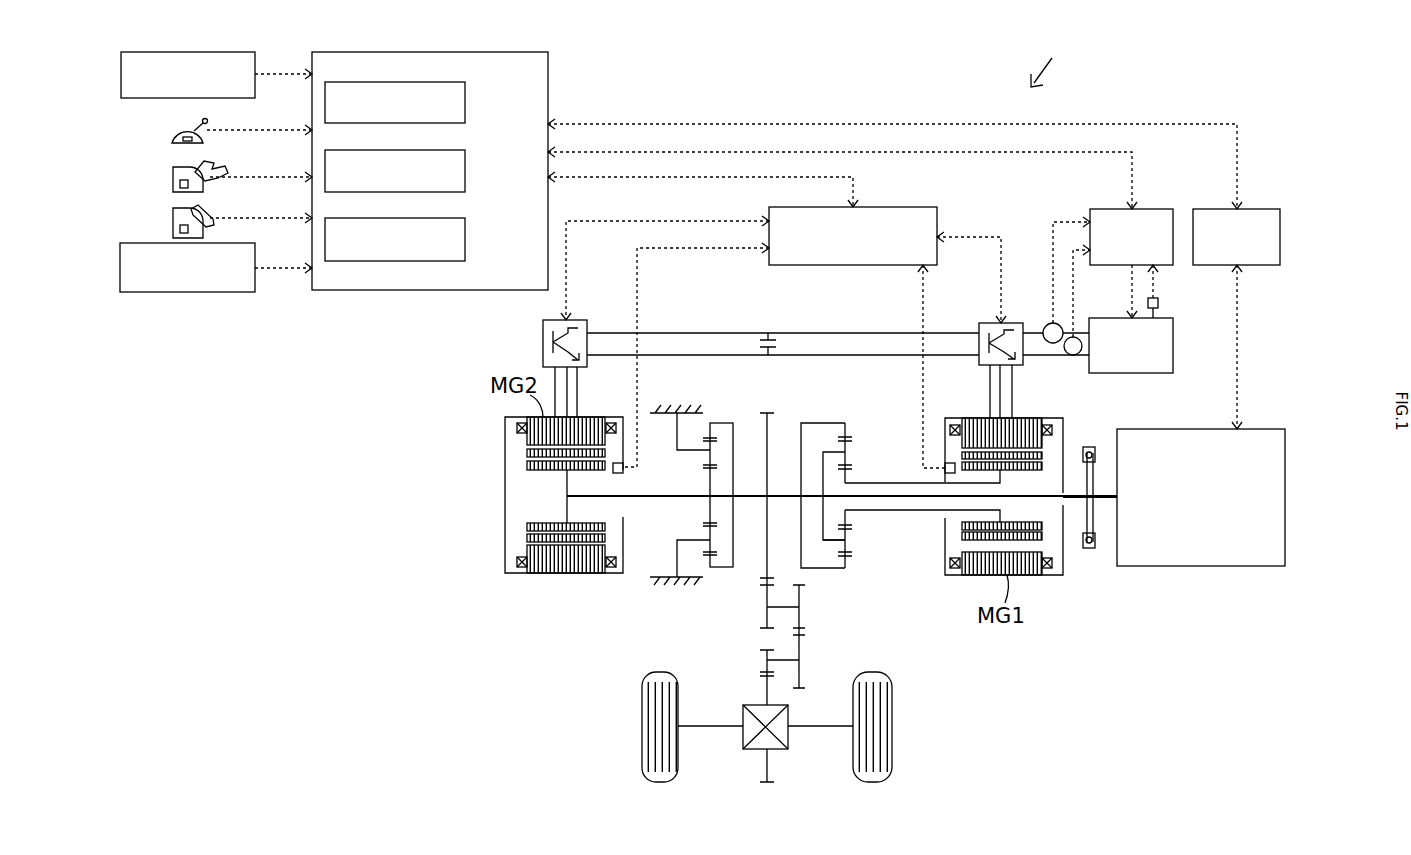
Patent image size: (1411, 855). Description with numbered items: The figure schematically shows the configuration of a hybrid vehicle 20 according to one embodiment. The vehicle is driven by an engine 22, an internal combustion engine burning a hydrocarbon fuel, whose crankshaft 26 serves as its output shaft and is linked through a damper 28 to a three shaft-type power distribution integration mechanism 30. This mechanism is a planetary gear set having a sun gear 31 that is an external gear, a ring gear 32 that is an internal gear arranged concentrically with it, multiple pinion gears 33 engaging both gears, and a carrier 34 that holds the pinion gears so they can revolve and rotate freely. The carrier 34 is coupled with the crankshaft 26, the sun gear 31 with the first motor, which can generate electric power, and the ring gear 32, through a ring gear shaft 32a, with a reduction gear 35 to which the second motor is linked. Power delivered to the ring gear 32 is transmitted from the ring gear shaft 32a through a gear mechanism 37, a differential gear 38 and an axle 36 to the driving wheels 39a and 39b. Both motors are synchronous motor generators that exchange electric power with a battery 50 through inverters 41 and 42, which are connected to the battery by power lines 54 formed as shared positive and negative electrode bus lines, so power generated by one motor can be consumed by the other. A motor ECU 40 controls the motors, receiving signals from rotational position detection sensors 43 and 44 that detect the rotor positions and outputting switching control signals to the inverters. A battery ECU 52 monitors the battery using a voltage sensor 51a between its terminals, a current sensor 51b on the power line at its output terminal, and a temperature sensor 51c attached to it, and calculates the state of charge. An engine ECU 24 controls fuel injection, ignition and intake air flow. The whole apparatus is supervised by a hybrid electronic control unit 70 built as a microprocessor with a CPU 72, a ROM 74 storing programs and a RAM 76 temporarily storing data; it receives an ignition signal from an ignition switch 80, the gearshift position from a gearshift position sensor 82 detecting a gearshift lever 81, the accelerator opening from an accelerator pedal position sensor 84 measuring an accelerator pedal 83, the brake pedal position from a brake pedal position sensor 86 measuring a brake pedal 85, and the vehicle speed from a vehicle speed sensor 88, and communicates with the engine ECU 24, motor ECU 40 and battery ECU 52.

The hybrid vehicle 20 is at (1051, 60).
The engine 22 is at (1285, 497).
The engine electronic control unit 24 is at (1248, 209).
The crankshaft 26 is at (1107, 497).
The damper 28 is at (1090, 549).
The power distribution integration mechanism 30 is at (853, 412).
The sun gear 31 is at (852, 512).
The ring gear 32 is at (850, 566).
The ring gear shaft 32a is at (787, 494).
The pinion gears 33 is at (850, 540).
The carrier 34 is at (832, 451).
The reduction gear 35 is at (727, 409).
The axle 36 is at (822, 727).
The gear mechanism 37 is at (826, 630).
The differential gear 38 is at (777, 750).
The driving wheel 39a is at (642, 726).
The driving wheel 39b is at (935, 710).
The motor electronic control unit 40 is at (893, 207).
The inverter 41 is at (990, 323).
The inverter 42 is at (573, 320).
The rotational position detection sensor 43 is at (945, 463).
The rotational position detection sensor 44 is at (618, 463).
The battery 50 is at (1133, 373).
The voltage sensor 51a is at (1079, 337).
The current sensor 51b is at (1046, 325).
The temperature sensor 51c is at (1158, 303).
The battery ECU 52 is at (1095, 209).
The power lines 54 is at (832, 355).
The hybrid electronic control unit 70 is at (432, 52).
The CPU 72 is at (465, 102).
The ROM 74 is at (465, 171).
The RAM 76 is at (465, 239).
The ignition switch 80 is at (121, 73).
The gearshift lever 81 is at (196, 119).
The gearshift position sensor 82 is at (176, 133).
The accelerator pedal 83 is at (197, 166).
The accelerator pedal position sensor 84 is at (173, 184).
The brake pedal 85 is at (193, 212).
The brake pedal position sensor 86 is at (173, 230).
The vehicle speed sensor 88 is at (120, 266).